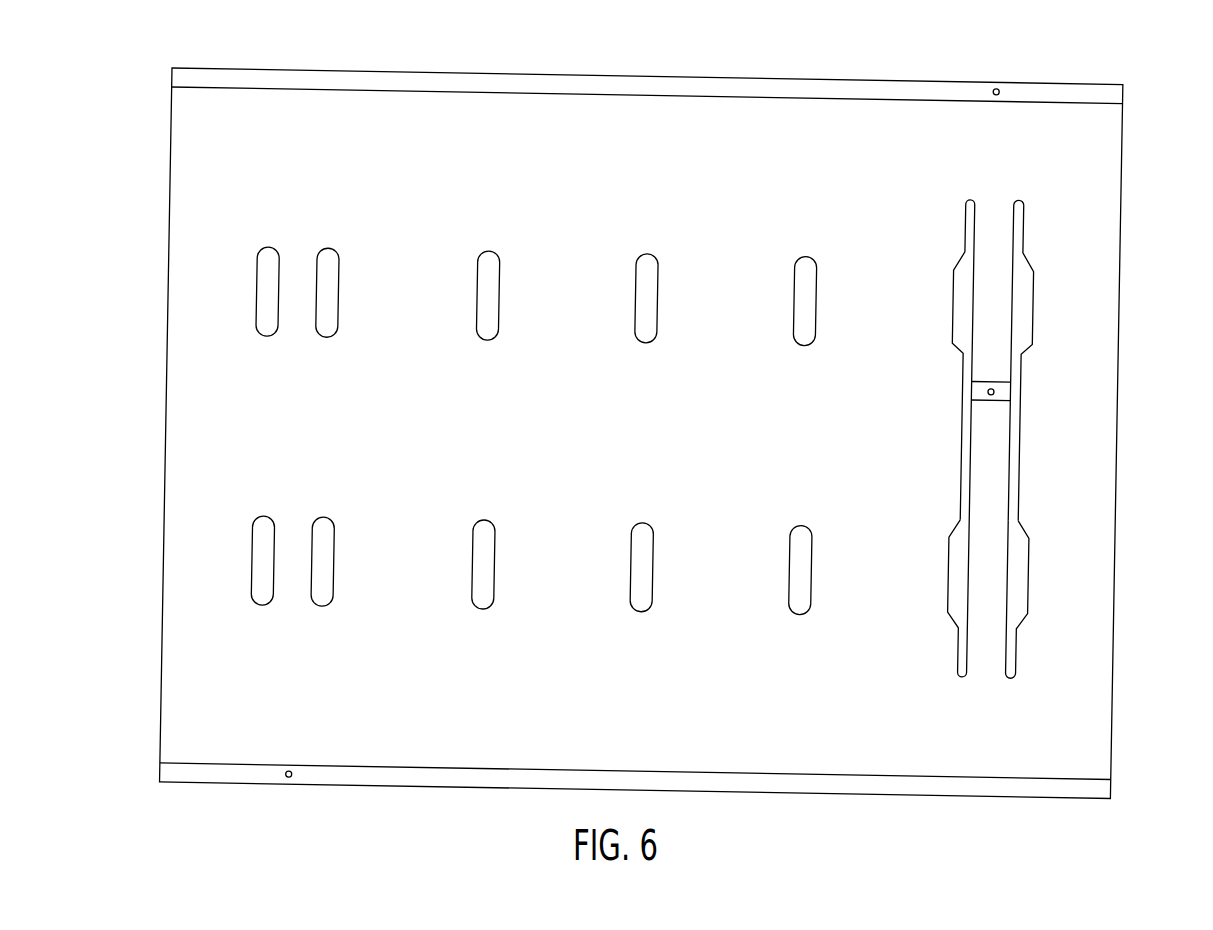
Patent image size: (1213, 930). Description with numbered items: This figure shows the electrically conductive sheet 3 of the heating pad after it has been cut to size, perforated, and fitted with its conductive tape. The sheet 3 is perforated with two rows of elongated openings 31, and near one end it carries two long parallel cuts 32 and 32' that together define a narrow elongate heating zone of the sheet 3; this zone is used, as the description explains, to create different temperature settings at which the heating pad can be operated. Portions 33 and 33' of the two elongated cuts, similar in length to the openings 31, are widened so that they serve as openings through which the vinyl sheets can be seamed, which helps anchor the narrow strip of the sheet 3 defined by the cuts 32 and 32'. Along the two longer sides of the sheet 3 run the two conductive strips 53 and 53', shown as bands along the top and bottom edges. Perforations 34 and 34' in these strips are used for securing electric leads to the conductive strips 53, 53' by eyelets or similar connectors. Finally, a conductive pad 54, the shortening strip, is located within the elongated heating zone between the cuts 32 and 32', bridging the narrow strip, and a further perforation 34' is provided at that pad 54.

The electrically conductive sheet 3 is at (380, 137).
The conductive strip 53 is at (647, 58).
The conductive strip 53' is at (635, 796).
The perforation 34 is at (1008, 58).
The perforation 34' is at (699, 555).
The elongated opening 31 is at (260, 562).
The elongated cut 32' is at (1064, 299).
The elongated cut 32 is at (1097, 326).
The widened portion of elongated cut 33' is at (1063, 598).
The widened portion of elongated cut 33 is at (1092, 600).
The conductive pad 54 is at (1005, 395).